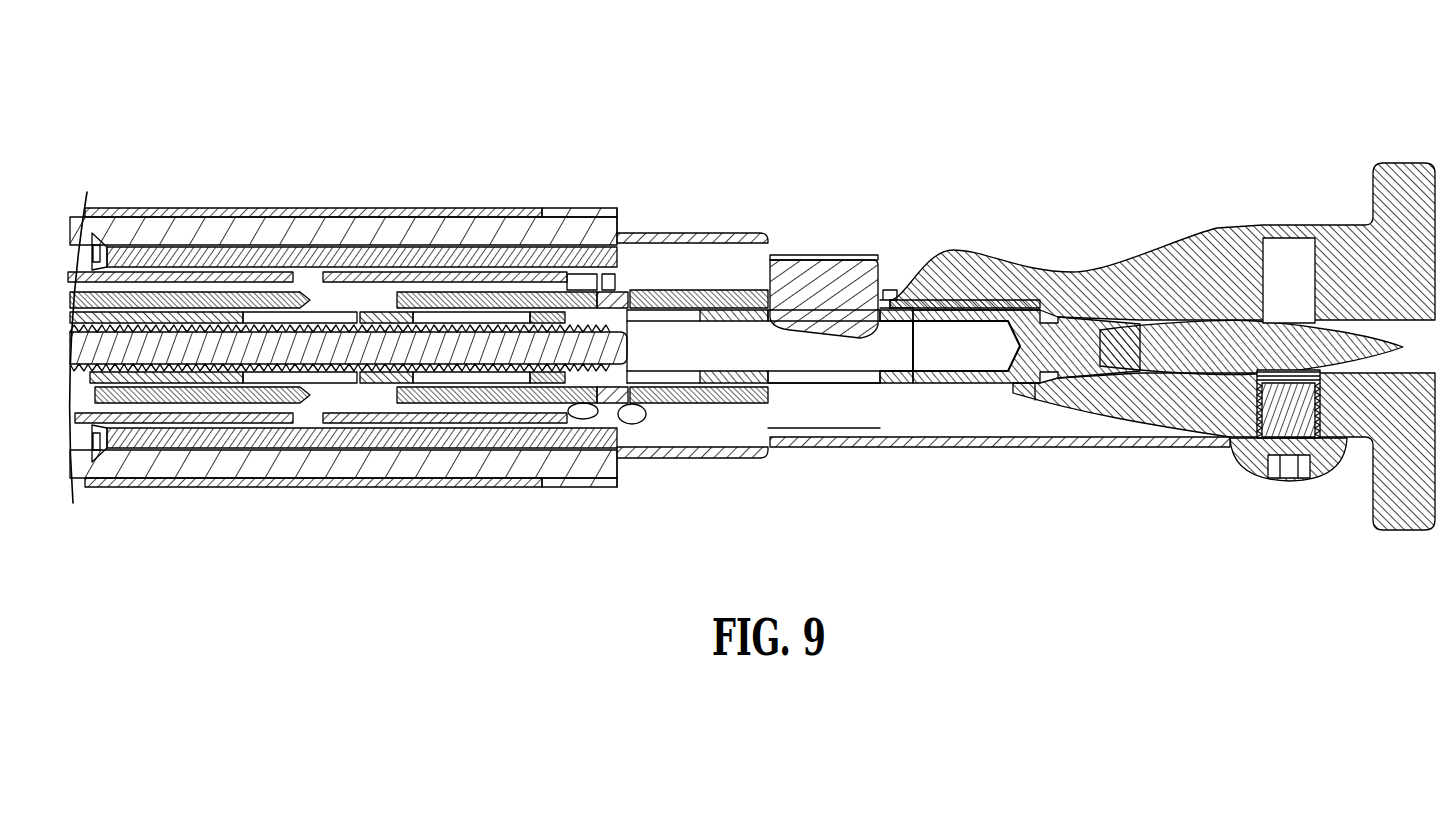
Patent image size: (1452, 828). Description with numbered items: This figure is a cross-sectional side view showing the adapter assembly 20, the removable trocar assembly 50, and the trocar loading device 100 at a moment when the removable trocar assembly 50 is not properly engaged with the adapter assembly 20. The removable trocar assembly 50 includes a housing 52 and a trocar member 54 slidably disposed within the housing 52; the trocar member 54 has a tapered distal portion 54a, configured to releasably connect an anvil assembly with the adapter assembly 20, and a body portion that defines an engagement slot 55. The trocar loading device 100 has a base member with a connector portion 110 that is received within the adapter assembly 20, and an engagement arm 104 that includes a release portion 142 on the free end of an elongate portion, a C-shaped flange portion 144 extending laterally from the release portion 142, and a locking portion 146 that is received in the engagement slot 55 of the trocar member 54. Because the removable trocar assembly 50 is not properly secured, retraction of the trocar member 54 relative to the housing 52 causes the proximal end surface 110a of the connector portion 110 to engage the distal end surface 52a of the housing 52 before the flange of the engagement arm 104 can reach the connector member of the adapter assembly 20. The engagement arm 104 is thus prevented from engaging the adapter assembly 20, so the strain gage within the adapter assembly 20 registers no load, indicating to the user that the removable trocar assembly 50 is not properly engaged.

The adapter assembly 20 is at (188, 160).
The housing 52 is at (432, 286).
The distal end surface 52a is at (630, 300).
The connector portion 110 is at (720, 290).
The proximal end surface 110a is at (628, 298).
The removable trocar assembly 50 is at (706, 412).
The trocar member 54 is at (797, 398).
The tapered distal portion 54a is at (1207, 335).
The C-shaped flange portion 144 is at (838, 258).
The locking portion 146 is at (853, 285).
The engagement slot 55 is at (893, 300).
The engagement arm 104 is at (966, 448).
The trocar loading device 100 is at (1171, 190).
The release portion 142 is at (848, 447).